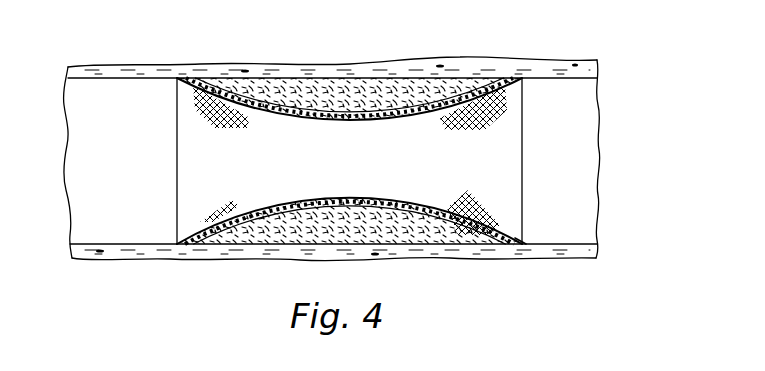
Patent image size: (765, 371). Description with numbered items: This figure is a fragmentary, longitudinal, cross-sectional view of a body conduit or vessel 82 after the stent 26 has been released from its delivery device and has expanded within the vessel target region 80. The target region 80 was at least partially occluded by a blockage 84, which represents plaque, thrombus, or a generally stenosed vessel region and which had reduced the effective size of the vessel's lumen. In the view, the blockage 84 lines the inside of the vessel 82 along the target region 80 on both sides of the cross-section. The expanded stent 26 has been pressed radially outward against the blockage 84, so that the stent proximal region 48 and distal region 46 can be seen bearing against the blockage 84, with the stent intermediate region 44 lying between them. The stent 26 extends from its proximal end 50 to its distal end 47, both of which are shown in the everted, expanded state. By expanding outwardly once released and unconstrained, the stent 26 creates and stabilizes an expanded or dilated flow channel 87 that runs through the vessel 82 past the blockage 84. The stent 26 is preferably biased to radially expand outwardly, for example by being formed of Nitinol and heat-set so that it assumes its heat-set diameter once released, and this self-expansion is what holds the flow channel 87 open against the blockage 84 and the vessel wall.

The stent 26 is at (282, 208).
The intermediate region 44 is at (338, 212).
The distal region 46 is at (500, 233).
The distal end 47 is at (530, 238).
The proximal region 48 is at (217, 227).
The proximal end 50 is at (172, 246).
The target region 80 is at (379, 80).
The vessel 82 is at (482, 51).
The blockage 84 is at (407, 87).
The flow channel 87 is at (340, 146).